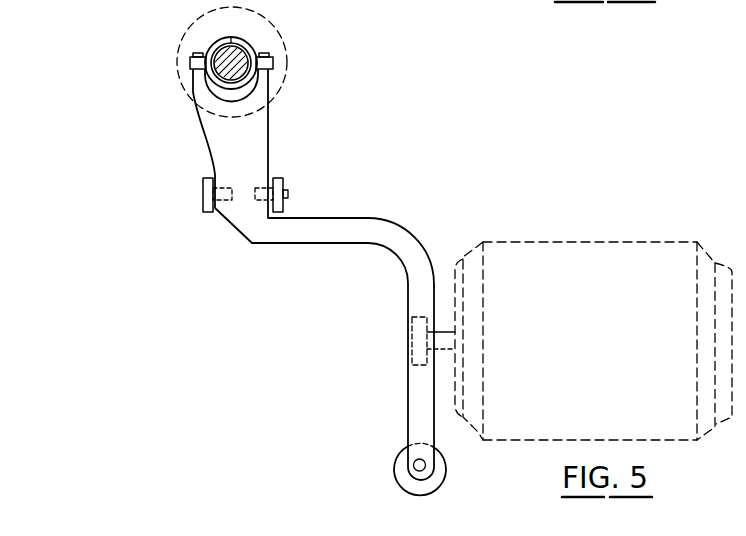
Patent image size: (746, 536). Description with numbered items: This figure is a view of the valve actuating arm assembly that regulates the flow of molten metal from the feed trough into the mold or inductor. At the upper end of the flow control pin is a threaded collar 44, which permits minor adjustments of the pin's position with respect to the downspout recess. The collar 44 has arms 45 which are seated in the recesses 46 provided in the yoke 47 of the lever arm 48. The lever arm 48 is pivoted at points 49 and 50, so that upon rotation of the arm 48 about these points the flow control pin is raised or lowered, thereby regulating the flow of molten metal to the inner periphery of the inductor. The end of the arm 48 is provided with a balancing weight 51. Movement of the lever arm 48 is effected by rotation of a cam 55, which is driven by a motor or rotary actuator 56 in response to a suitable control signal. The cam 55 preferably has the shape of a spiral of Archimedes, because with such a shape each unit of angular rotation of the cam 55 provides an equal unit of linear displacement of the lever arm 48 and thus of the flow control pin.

The threaded collar 44 is at (246, 43).
The arms 45 is at (273, 94).
The recesses 46 is at (275, 64).
The yoke 47 is at (248, 153).
The lever arm 48 is at (363, 218).
The pivot point 49 is at (203, 196).
The pivot point 50 is at (288, 194).
The balancing weight 51 is at (400, 470).
The cam 55 is at (412, 356).
The motor or rotary actuator 56 is at (593, 242).